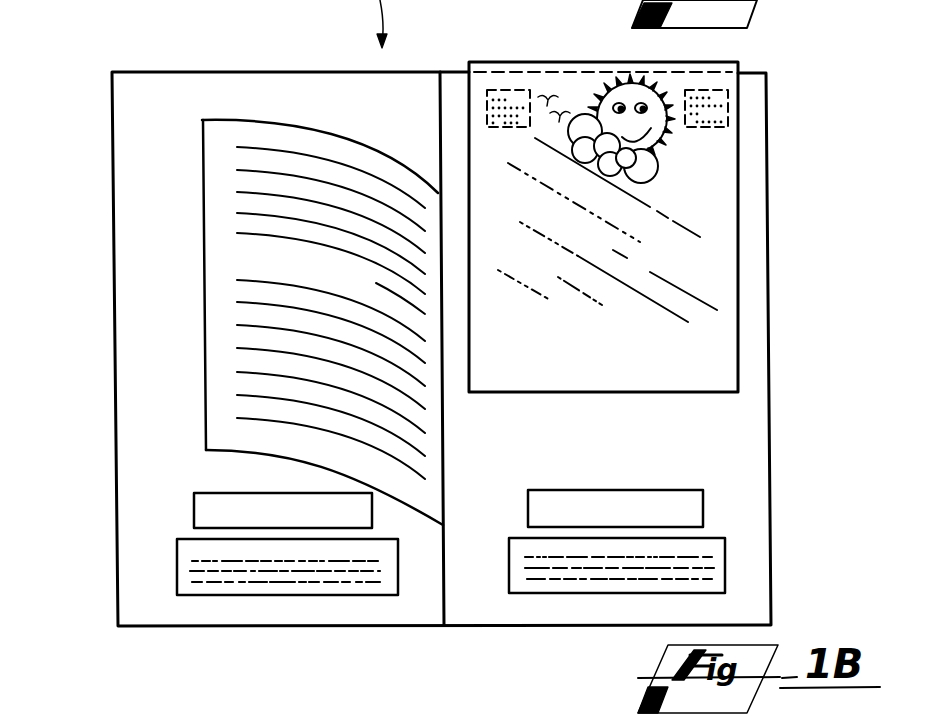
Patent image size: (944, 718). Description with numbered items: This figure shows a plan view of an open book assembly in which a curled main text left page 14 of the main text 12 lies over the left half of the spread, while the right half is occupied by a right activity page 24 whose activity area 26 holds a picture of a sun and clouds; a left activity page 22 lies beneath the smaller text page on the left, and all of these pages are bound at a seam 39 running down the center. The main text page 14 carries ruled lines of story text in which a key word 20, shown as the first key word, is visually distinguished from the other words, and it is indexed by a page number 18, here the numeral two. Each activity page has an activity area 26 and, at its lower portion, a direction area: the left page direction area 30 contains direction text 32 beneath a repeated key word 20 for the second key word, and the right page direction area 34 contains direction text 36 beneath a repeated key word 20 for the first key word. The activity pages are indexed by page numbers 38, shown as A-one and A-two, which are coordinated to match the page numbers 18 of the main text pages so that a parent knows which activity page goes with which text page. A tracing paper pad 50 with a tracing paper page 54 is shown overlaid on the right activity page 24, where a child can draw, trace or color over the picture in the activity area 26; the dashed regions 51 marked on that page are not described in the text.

The main text 12 is at (358, 125).
The main text left page 14 is at (223, 143).
The page number 18 is at (198, 445).
The key word 20 is at (240, 269).
The left activity page 22 is at (145, 102).
The right activity page 24 is at (752, 92).
The activity area 26 is at (180, 392).
The left page direction area 30 is at (200, 596).
The direction text 32 is at (257, 582).
The right page direction area 34 is at (523, 595).
The direction text 36 is at (583, 582).
The page number 38 is at (126, 605).
The seam 39 is at (438, 102).
The tracing paper pad 50 is at (703, 412).
The marker region 51 is at (508, 90).
The tracing paper page 54 is at (545, 392).